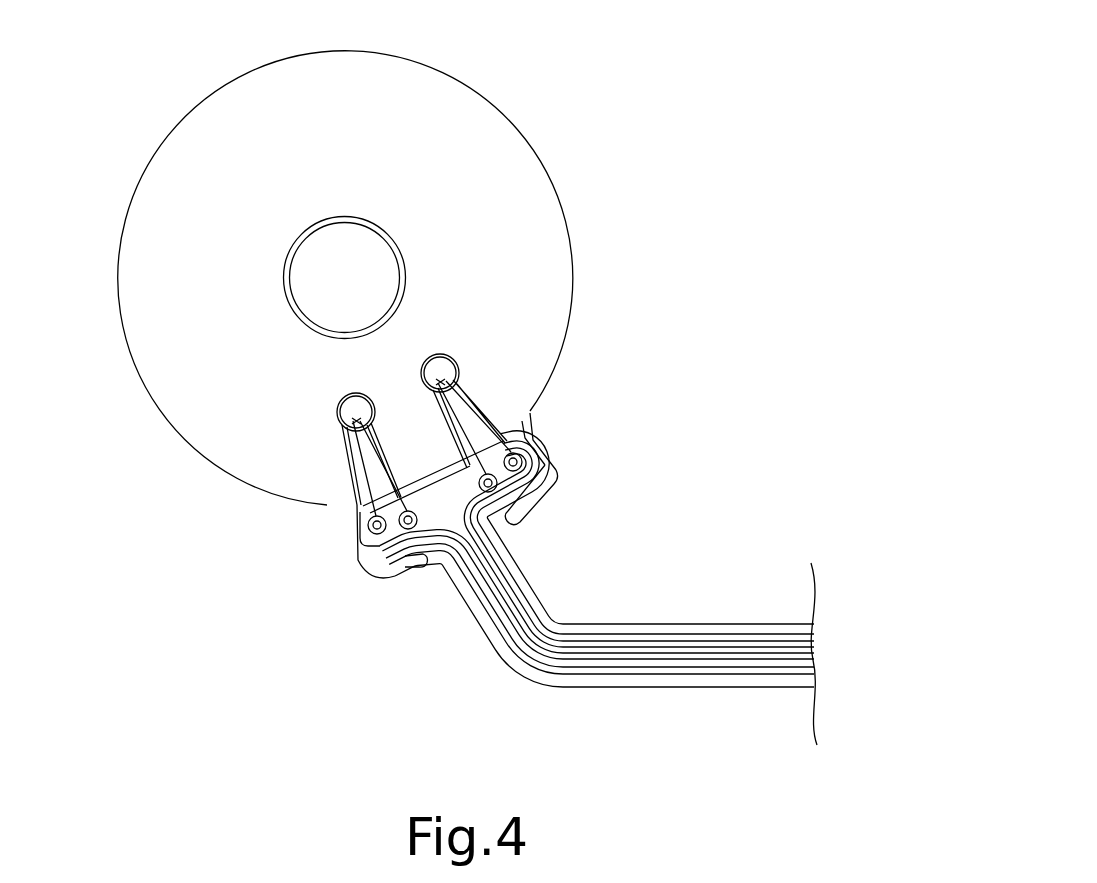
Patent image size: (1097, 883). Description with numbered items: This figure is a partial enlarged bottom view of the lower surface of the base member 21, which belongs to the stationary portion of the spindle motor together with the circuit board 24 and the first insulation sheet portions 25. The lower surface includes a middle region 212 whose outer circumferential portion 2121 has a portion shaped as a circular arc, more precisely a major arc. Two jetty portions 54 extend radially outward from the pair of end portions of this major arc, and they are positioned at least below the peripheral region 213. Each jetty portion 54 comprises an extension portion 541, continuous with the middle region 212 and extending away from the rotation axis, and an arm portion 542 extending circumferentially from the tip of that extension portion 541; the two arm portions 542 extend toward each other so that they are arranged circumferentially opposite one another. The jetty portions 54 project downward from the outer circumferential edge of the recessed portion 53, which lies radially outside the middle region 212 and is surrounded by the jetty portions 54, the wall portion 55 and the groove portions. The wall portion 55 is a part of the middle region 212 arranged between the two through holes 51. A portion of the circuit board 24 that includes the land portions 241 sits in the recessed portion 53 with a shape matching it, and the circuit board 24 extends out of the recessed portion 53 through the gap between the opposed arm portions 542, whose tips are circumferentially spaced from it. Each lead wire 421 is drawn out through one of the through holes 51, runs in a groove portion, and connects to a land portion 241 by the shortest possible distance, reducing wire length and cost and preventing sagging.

The base member 21 is at (735, 100).
The middle region 212 is at (493, 164).
The peripheral region 213 is at (622, 226).
The outer circumferential portion 2121 is at (172, 430).
The wall portion 55 is at (410, 423).
The first insulation sheet portions 25 is at (360, 473).
The through holes 51 is at (446, 372).
The lead wires 421 is at (372, 528).
The land portions 241 is at (377, 563).
The recessed portion 53 is at (400, 570).
The circuit board 24 is at (503, 602).
The jetty portions 54 is at (707, 411).
The extension portions 541 is at (535, 448).
The arm portions 542 is at (532, 503).